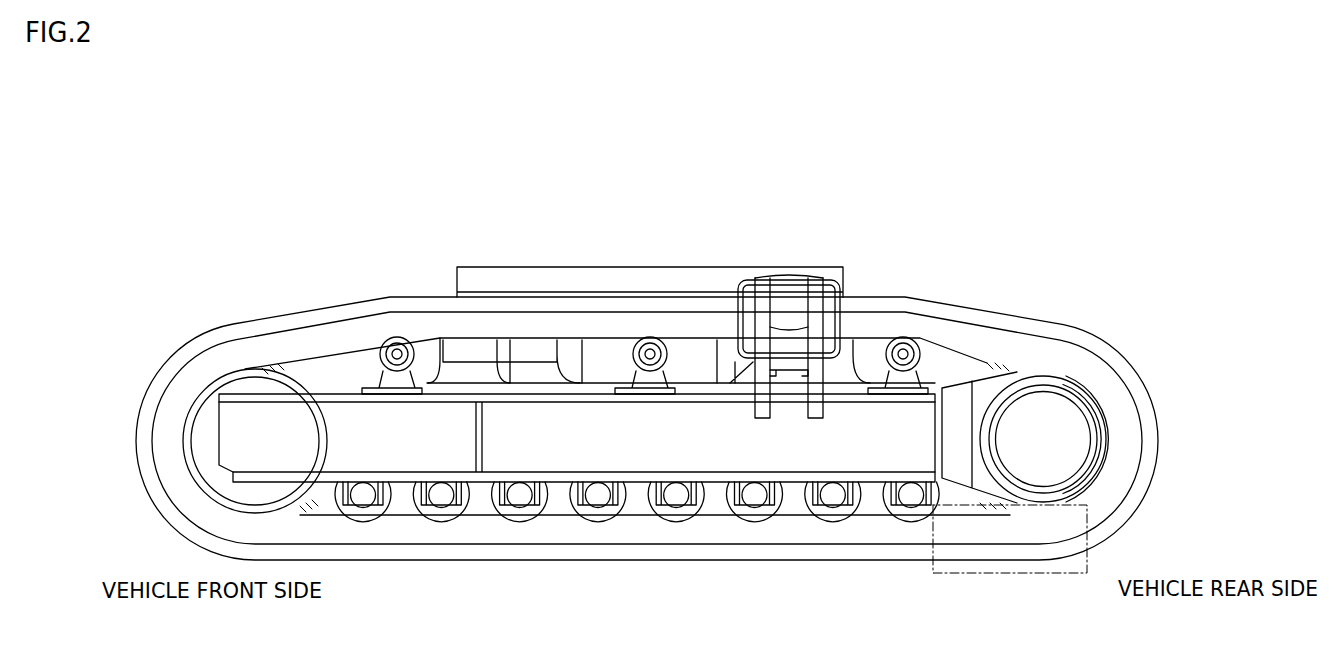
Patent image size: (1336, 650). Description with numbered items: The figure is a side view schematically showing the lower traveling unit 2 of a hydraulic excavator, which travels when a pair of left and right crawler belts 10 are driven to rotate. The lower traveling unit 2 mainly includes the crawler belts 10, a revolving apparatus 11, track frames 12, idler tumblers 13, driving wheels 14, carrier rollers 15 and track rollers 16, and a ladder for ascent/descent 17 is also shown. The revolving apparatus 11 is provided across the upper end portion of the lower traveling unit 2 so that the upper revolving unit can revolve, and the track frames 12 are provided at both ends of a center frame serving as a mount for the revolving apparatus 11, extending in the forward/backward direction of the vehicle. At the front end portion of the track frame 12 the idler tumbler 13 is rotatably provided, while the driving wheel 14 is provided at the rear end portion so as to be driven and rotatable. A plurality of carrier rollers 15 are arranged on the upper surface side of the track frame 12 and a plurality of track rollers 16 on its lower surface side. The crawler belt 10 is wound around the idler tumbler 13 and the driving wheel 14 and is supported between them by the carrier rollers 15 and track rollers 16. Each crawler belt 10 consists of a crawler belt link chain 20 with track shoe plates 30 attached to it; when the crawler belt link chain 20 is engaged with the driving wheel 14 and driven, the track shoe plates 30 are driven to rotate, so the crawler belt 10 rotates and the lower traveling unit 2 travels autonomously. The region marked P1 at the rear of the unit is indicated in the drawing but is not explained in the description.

The lower traveling unit 2 is at (851, 221).
The crawler belt 10 is at (1003, 272).
The revolving apparatus 11 is at (508, 280).
The track frame 12 is at (559, 448).
The idler tumbler 13 is at (249, 388).
The driving wheel 14 is at (1022, 365).
The carrier roller 15 is at (398, 337).
The track roller 16 is at (680, 512).
The ladder for ascent/descent 17 is at (787, 318).
The crawler belt link chain 20 is at (938, 333).
The track shoe plate 30 is at (882, 298).
The rear region P1 is at (1013, 578).